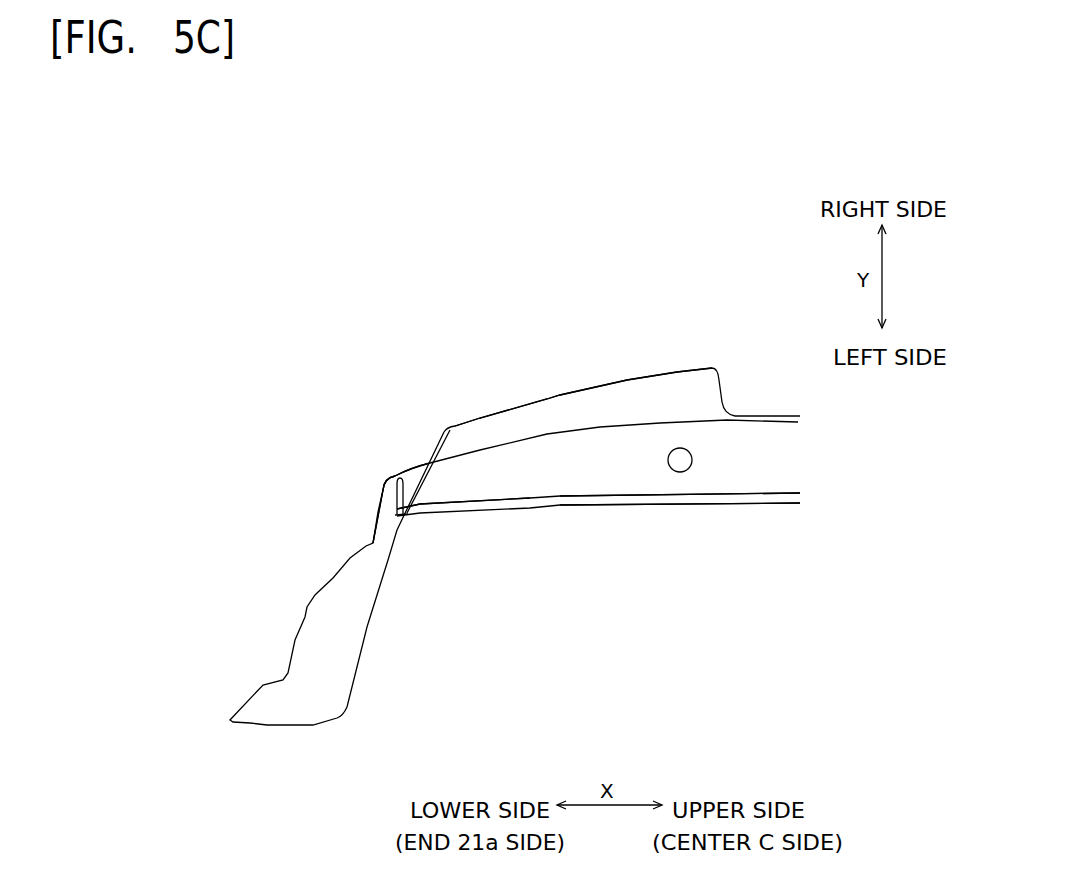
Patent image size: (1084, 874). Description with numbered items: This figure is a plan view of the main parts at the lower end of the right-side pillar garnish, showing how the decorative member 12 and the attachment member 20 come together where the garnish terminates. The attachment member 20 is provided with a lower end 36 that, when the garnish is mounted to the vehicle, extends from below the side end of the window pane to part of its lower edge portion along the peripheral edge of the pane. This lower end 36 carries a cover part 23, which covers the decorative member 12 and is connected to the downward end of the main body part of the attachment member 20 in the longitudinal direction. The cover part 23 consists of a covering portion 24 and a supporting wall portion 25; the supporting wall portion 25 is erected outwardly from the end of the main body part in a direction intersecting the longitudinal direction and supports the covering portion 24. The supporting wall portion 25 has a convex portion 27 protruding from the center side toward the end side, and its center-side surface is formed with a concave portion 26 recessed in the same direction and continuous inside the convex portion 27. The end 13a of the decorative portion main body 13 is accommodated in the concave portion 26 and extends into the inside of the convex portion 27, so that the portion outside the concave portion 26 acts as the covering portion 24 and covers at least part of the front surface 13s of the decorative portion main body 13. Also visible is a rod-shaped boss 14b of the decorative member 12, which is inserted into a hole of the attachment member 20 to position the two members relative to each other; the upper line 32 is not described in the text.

The decorative member 12 is at (740, 508).
The decorative portion main body 13 is at (613, 503).
The end of the decorative portion main body 13a is at (433, 492).
The front surface of the decorative portion main body 13s is at (682, 478).
The boss 14b is at (692, 460).
The attachment member 20 is at (697, 328).
The cover part 23 is at (313, 460).
The covering portion 24 is at (398, 477).
The supporting wall portion 25 is at (382, 494).
The concave portion 26 is at (408, 514).
The convex portion 27 is at (378, 507).
The upper wall 32 is at (600, 387).
The lower end 36 is at (288, 617).